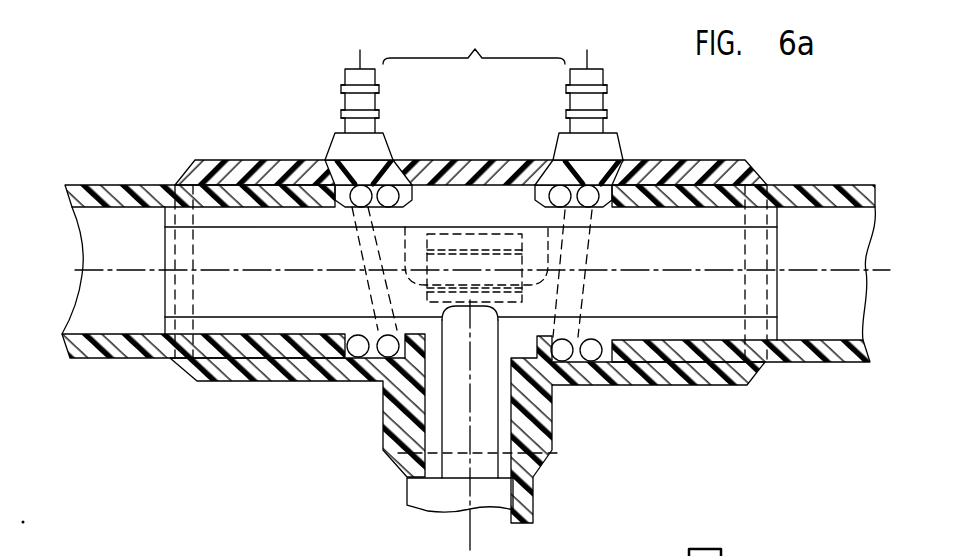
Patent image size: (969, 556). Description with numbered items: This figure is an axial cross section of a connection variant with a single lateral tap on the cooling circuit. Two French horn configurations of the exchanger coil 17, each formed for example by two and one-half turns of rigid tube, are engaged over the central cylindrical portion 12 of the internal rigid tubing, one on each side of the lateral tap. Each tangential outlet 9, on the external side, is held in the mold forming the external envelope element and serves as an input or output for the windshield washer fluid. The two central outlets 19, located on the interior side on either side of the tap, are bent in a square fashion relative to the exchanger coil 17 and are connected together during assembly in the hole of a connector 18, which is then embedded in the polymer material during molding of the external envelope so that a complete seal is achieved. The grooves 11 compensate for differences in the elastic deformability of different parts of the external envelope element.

The tangential outlet 9 is at (350, 127).
The groove 11 is at (602, 395).
The central cylindrical portion 12 is at (474, 43).
The exchanger coil 17 is at (558, 186).
The connector 18 is at (475, 257).
The central outlet 19 is at (379, 180).